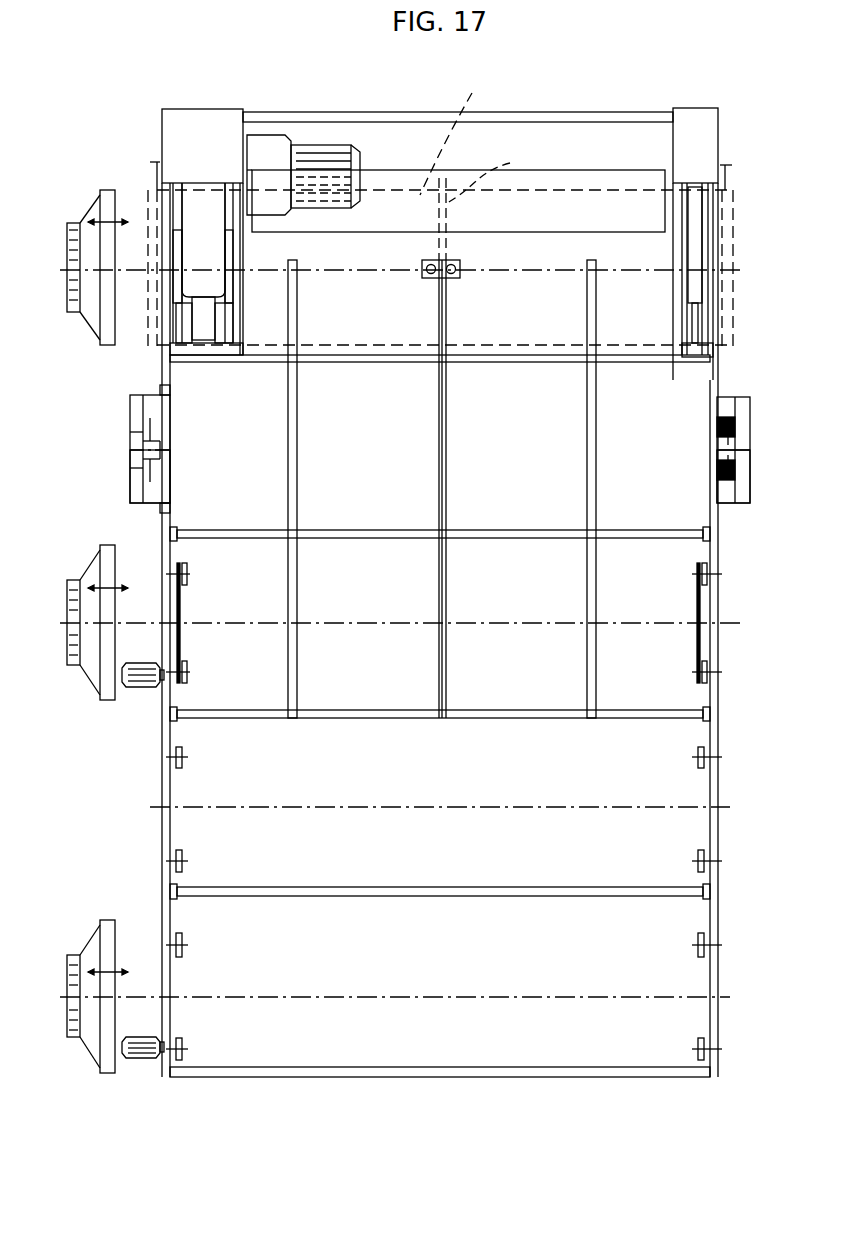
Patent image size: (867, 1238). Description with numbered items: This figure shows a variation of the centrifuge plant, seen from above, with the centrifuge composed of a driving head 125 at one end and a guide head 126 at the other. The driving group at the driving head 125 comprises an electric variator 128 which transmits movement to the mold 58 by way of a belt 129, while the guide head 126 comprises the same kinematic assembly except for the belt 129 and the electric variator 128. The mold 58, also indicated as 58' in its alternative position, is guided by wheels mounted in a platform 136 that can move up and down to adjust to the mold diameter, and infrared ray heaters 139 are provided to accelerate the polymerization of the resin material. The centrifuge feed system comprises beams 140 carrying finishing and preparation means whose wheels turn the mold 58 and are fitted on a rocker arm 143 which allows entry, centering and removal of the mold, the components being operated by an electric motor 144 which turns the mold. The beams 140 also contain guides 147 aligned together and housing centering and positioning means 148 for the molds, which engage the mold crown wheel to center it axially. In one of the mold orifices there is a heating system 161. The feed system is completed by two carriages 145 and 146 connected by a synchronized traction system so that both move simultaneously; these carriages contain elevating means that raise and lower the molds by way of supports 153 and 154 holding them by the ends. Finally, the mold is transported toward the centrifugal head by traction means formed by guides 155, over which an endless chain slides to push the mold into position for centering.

The driving head 125 is at (190, 125).
The guide head 126 is at (705, 128).
The electric variator 128 is at (272, 148).
The infrared ray heaters 139 is at (372, 150).
The mold 58 is at (462, 126).
The drive element 58' is at (494, 169).
The platform 136 is at (105, 210).
The centering and positioning means 148 is at (462, 266).
The belt 129 is at (207, 327).
The support 154 is at (142, 410).
The carriage 146 is at (140, 482).
The carriage 145 is at (735, 400).
The support 153 is at (727, 500).
The guides 155 is at (298, 452).
The guides 147 is at (449, 452).
The rocker arm 143 is at (187, 628).
The heating system 161 is at (96, 665).
The electric motor 144 is at (141, 688).
The beams 140 is at (163, 852).